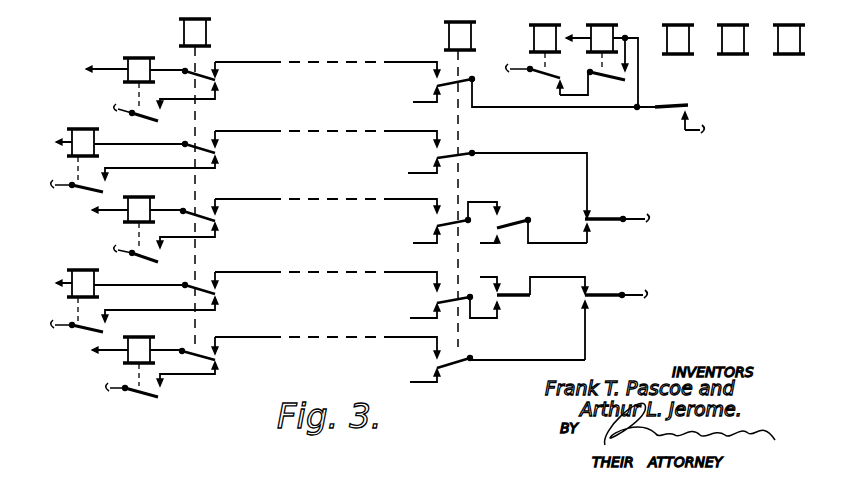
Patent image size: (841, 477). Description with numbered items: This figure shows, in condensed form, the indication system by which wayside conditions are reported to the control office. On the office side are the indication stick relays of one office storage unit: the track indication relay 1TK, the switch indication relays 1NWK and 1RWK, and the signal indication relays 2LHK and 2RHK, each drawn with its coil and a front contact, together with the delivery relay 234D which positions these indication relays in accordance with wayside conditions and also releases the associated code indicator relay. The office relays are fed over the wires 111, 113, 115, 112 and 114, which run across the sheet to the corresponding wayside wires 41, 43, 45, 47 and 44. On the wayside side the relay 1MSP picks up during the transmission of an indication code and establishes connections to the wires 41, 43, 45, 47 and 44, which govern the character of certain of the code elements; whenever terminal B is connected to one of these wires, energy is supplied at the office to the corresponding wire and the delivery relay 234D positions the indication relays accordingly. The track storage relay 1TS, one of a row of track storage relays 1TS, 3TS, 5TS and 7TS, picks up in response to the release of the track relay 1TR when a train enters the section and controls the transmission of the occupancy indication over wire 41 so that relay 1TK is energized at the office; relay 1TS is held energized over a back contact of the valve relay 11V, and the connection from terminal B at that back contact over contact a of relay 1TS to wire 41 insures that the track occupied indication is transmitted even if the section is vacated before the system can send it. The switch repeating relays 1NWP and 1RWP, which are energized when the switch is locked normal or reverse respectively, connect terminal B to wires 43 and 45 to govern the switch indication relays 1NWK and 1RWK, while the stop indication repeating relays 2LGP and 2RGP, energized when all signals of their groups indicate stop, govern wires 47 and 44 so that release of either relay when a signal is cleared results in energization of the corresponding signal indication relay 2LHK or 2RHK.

The delivery relay 234D is at (201, 172).
The track indication relay 1TK is at (144, 77).
The switch indication relay 1NWK is at (131, 157).
The switch indication relay 1RWK is at (148, 217).
The signal indication relay 2LHK is at (131, 298).
The signal indication relay 2RHK is at (148, 356).
The wire 111 is at (301, 50).
The wire 113 is at (301, 119).
The wire 115 is at (301, 187).
The wire 112 is at (301, 260).
The wire 114 is at (301, 326).
The wire 41 is at (430, 72).
The wire 43 is at (430, 143).
The wire 45 is at (428, 212).
The wire 47 is at (429, 285).
The wire 44 is at (429, 353).
The relay 1MSP is at (456, 181).
The valve relay 11V is at (525, 48).
The track storage relay 1TS is at (599, 54).
The track storage relay 3TS is at (676, 28).
The track storage relay 5TS is at (731, 28).
The track storage relay 7TS is at (787, 28).
The track relay 1TR is at (594, 106).
The reverse switch repeating relay 1RWP is at (503, 212).
The normal switch repeating relay 1NWP is at (565, 198).
The stop indication repeating relay 2LGP is at (529, 287).
The stop indication repeating relay 2RGP is at (564, 308).